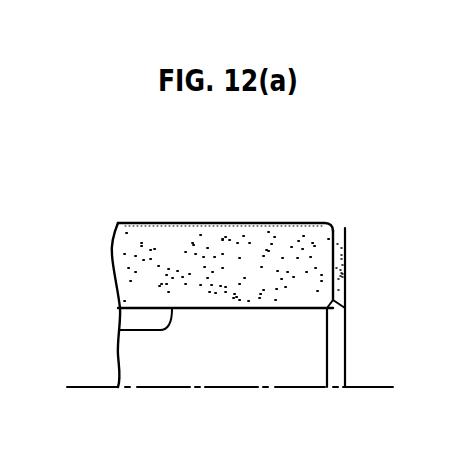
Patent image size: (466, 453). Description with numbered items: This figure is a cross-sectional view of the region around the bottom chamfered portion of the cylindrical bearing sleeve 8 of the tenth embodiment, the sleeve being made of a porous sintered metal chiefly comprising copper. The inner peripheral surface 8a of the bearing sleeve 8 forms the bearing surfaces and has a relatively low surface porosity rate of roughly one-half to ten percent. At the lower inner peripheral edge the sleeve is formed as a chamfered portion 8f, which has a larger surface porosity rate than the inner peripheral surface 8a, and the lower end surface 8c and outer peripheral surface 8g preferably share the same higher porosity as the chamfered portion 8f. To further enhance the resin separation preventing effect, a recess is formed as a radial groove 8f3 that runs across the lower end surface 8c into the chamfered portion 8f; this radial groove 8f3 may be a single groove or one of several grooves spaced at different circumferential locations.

The bearing sleeve 8 is at (96, 264).
The inner peripheral surface 8a is at (120, 325).
The lower end surface 8c is at (345, 250).
The chamfered portion 8f is at (336, 304).
The radial groove 8f3 is at (342, 258).
The outer peripheral surface 8g is at (211, 223).